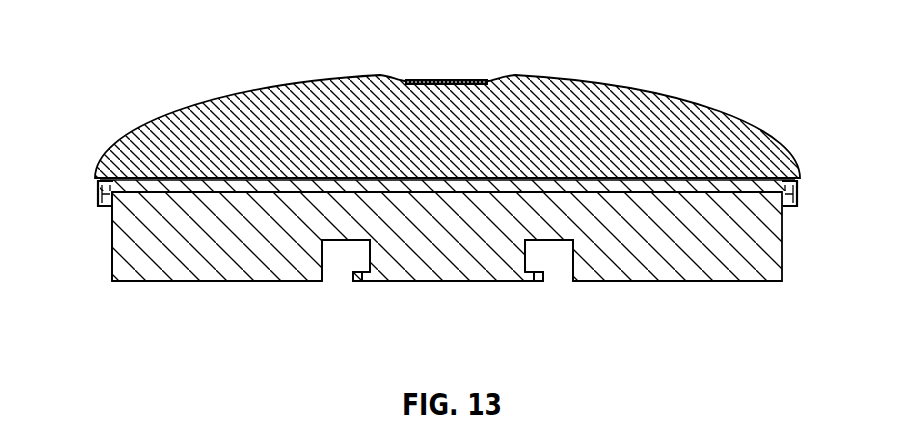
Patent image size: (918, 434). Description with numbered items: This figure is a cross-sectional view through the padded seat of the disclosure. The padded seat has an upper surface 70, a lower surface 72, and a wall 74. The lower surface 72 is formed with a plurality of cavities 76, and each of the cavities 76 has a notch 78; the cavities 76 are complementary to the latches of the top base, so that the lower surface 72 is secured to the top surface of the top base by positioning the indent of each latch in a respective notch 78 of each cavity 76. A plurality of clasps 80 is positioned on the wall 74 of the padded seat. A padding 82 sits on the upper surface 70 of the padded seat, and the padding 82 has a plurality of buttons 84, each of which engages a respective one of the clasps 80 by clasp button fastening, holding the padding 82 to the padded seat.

The upper surface 70 is at (203, 252).
The lower surface 72 is at (650, 282).
The wall 74 is at (113, 254).
The cavities 76 is at (322, 257).
The notch 78 is at (370, 252).
The clasps 80 is at (108, 205).
The padding 82 is at (620, 92).
The buttons 84 is at (96, 201).